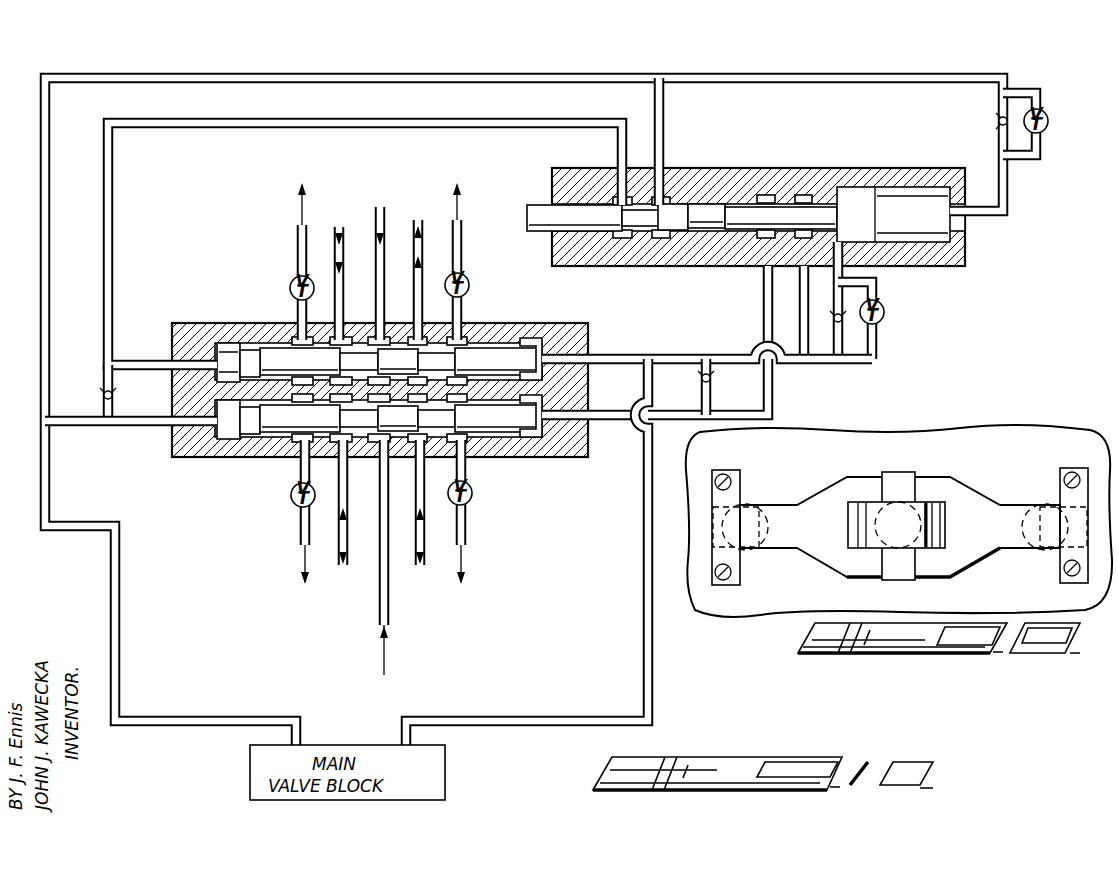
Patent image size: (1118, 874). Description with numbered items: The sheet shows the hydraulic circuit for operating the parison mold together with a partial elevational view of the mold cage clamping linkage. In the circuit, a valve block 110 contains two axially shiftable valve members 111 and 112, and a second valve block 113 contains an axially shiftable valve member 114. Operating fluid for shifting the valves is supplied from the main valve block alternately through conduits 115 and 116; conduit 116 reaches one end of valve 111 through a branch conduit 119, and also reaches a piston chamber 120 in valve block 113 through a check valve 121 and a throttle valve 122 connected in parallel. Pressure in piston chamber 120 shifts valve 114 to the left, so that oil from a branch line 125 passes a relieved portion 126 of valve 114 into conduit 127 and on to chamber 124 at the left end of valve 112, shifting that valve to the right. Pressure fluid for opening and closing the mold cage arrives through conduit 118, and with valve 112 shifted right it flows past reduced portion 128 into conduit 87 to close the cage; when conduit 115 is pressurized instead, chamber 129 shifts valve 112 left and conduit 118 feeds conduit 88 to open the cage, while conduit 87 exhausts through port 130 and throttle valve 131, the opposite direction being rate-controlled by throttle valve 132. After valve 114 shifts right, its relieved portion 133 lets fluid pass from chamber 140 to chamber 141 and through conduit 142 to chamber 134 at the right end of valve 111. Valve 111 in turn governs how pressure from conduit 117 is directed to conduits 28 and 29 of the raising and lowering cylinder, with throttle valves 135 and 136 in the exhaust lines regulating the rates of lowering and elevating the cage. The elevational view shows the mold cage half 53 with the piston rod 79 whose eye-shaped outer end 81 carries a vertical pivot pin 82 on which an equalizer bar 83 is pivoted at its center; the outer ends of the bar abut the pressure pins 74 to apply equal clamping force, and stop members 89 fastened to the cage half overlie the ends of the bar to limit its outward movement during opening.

In FIG. 10, the valve block 110 is at (578, 445).
In FIG. 10, the valve member 111 is at (500, 414).
In FIG. 10, the valve member 112 is at (497, 352).
In FIG. 10, the second valve block 113 is at (960, 252).
In FIG. 10, the valve member 114 is at (755, 222).
In FIG. 10, the conduit 115 is at (538, 688).
In FIG. 10, the conduit 116 is at (279, 80).
In FIG. 10, the conduit 117 is at (388, 607).
In FIG. 10, the conduit 118 is at (382, 270).
In FIG. 10, the branch conduit 119 is at (88, 425).
In FIG. 10, the piston chamber 120 is at (920, 195).
In FIG. 10, the check valve 121 is at (995, 120).
In FIG. 10, the throttle valve 122 is at (1048, 121).
In FIG. 10, the chamber 124 is at (228, 345).
In FIG. 10, the branch line 125 is at (662, 122).
In FIG. 10, the relieved portion 126 is at (645, 215).
In FIG. 10, the conduit 127 is at (112, 194).
In FIG. 10, the reduced portion 128 is at (357, 350).
In FIG. 10, the chamber 129 is at (540, 340).
In FIG. 10, the exhaust port 130 is at (300, 332).
In FIG. 10, the throttle valve 131 is at (292, 281).
In FIG. 10, the throttle valve 132 is at (468, 282).
In FIG. 10, the relieved portion 133 is at (705, 212).
In FIG. 10, the chamber 134 is at (530, 434).
In FIG. 10, the throttle valve 135 is at (291, 494).
In FIG. 10, the throttle valve 136 is at (472, 503).
In FIG. 10, the chamber 140 is at (803, 197).
In FIG. 10, the chamber 141 is at (768, 197).
In FIG. 10, the conduit 142 is at (773, 395).
In FIG. 10, the conduit 28 is at (423, 500).
In FIG. 10, the conduit 29 is at (345, 500).
In FIG. 10, the conduit 87 is at (342, 268).
In FIG. 10, the conduit 88 is at (420, 268).
In FIG. 9, the parison mold cage half 53 is at (925, 447).
In FIG. 9, the pressure pin 74 is at (745, 503).
In FIG. 9, the piston rod 79 is at (884, 520).
In FIG. 9, the outer end 81 is at (868, 540).
In FIG. 9, the pivot pin 82 is at (915, 578).
In FIG. 9, the equalizer bar 83 is at (962, 495).
In FIG. 9, the stop member 89 is at (1075, 470).